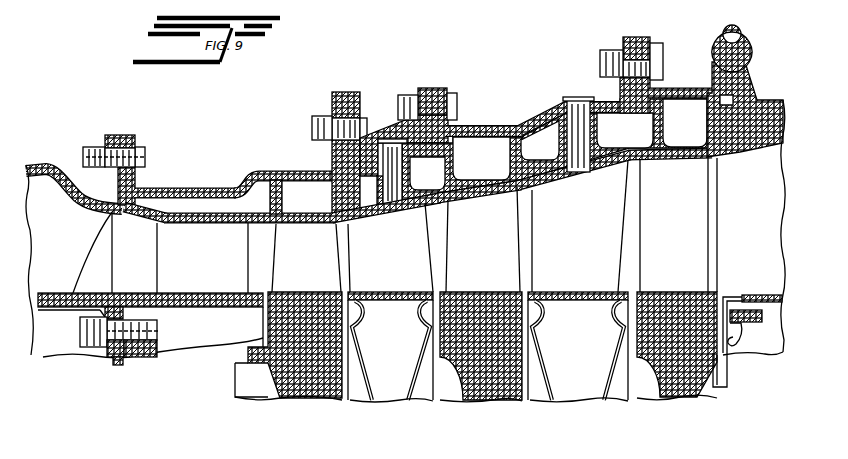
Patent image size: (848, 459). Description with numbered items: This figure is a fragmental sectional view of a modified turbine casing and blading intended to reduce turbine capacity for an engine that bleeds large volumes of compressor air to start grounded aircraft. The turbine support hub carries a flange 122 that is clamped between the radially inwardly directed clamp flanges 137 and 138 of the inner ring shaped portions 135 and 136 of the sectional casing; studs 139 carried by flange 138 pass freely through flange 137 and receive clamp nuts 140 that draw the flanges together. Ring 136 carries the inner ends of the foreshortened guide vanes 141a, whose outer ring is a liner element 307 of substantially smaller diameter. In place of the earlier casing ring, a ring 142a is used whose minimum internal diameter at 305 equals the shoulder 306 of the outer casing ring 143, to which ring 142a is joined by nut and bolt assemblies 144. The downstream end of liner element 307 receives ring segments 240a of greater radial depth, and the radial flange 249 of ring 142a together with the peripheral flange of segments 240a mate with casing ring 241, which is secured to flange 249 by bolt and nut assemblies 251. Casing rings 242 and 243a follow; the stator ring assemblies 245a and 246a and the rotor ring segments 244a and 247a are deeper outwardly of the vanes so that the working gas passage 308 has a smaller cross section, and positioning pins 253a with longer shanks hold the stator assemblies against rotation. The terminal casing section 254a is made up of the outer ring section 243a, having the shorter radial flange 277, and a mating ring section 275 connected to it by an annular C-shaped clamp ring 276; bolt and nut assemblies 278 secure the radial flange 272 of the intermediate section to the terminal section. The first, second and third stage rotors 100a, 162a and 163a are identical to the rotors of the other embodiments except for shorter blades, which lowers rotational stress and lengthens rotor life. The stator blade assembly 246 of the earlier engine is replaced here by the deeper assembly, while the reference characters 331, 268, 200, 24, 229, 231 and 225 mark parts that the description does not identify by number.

The outer casing ring 143 is at (60, 165).
The nut and bolt assemblies 144 is at (140, 152).
The casing ring 142a is at (176, 190).
The minimum internal diameter 305 is at (210, 189).
The shoulder 306 is at (113, 214).
The liner element 307 is at (207, 223).
The working gas passage 308 is at (257, 183).
The foreshortened guide vanes 141a is at (187, 266).
The inner ring shaped portion 136 is at (220, 293).
The inner ring shaped portion 135 is at (53, 310).
The studs 139 is at (152, 336).
The clamp nuts 140 is at (95, 340).
The clamp flange 137 is at (108, 349).
The clamp flange 138 is at (136, 358).
The flange 122 is at (118, 366).
The radial flange 249 is at (330, 160).
The bolt 331 is at (346, 84).
The bolt and nut assemblies 251 is at (314, 122).
The casing ring 241 is at (363, 148).
The stator blade assembly 246 is at (421, 90).
The nut 268 is at (436, 96).
The casing ring 242 is at (480, 125).
The positioning pins 253a is at (543, 112).
The stator ring assembly 245a is at (373, 224).
The ring segments 240a is at (307, 224).
The rotor ring segments 244a is at (488, 194).
The stator ring assembly 246a is at (598, 172).
The rotor segment ring 247a is at (688, 154).
The radial flange 272 is at (636, 37).
The radial flange 277 is at (652, 46).
The bolt and nut assemblies 278 is at (617, 63).
The outer ring section 243a is at (673, 97).
The mating ring section 275 is at (763, 107).
The C-shaped clamp ring 276 is at (752, 58).
The terminal casing section 254a is at (705, 46).
The first stage rotor 100a is at (312, 399).
The second stage rotor 162a is at (476, 401).
The seal strip 200 is at (608, 374).
The third stage rotor 163a is at (682, 386).
The seal assembly 24 is at (735, 282).
The seal plate 229 is at (768, 295).
The seal block 231 is at (757, 324).
The seal ring 225 is at (720, 386).